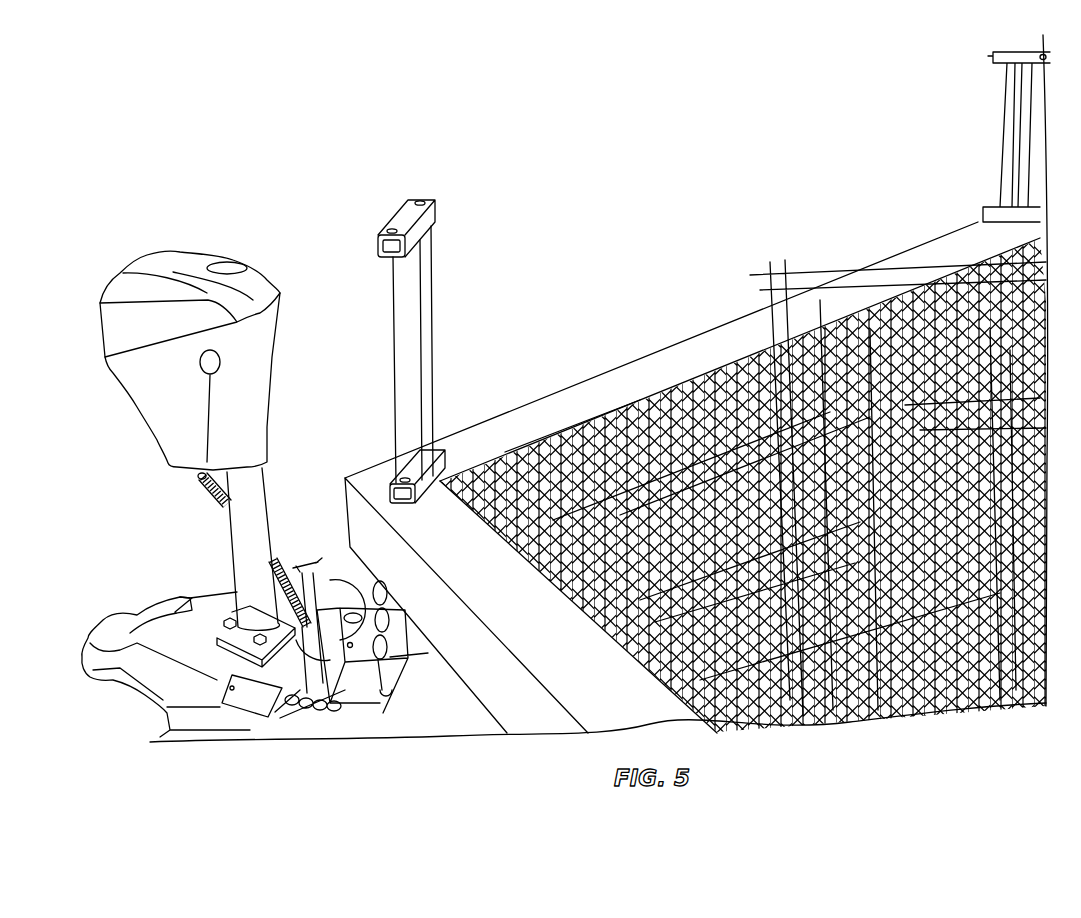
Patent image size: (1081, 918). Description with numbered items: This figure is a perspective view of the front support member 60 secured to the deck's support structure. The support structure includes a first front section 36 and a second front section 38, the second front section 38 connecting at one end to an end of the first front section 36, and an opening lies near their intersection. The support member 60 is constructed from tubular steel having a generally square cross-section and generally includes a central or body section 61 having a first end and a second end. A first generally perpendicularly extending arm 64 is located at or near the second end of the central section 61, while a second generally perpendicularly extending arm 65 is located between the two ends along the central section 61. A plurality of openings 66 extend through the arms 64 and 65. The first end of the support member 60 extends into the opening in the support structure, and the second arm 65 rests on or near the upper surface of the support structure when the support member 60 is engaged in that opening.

The first front section 36 is at (640, 373).
The second front section 38 is at (540, 720).
The front support member 60 is at (418, 329).
The central section 61 is at (431, 282).
The first generally perpendicularly extending arm 64 is at (403, 216).
The second generally perpendicularly extending arm 65 is at (388, 486).
The openings 66 is at (418, 199).